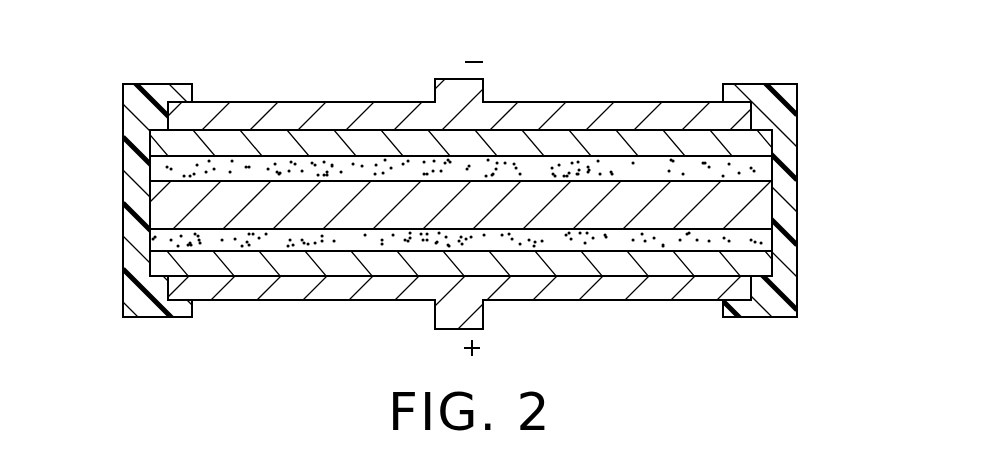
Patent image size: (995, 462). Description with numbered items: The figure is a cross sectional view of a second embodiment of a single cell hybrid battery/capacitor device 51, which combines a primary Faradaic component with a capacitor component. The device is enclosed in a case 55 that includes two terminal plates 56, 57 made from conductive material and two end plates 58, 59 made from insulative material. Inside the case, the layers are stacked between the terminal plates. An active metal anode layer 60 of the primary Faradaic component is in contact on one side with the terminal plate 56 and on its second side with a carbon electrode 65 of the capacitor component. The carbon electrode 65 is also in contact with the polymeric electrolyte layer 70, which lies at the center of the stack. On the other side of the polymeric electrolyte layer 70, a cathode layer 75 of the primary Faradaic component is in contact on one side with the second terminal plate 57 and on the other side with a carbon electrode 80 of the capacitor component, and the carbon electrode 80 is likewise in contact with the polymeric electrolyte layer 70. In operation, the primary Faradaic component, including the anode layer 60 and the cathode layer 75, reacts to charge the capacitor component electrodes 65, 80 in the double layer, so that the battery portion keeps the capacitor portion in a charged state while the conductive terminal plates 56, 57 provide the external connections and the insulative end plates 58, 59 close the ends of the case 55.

The hybrid battery/capacitor device 51 is at (590, 77).
The case 55 is at (800, 152).
The terminal plate 56 is at (288, 117).
The terminal plate 57 is at (253, 292).
The end plate 58 is at (797, 243).
The end plate 59 is at (128, 223).
The active metal anode layer 60 is at (383, 135).
The carbon electrode 65 is at (516, 165).
The polymeric electrolyte layer 70 is at (623, 210).
The cathode layer 75 is at (573, 268).
The carbon electrode 80 is at (343, 240).